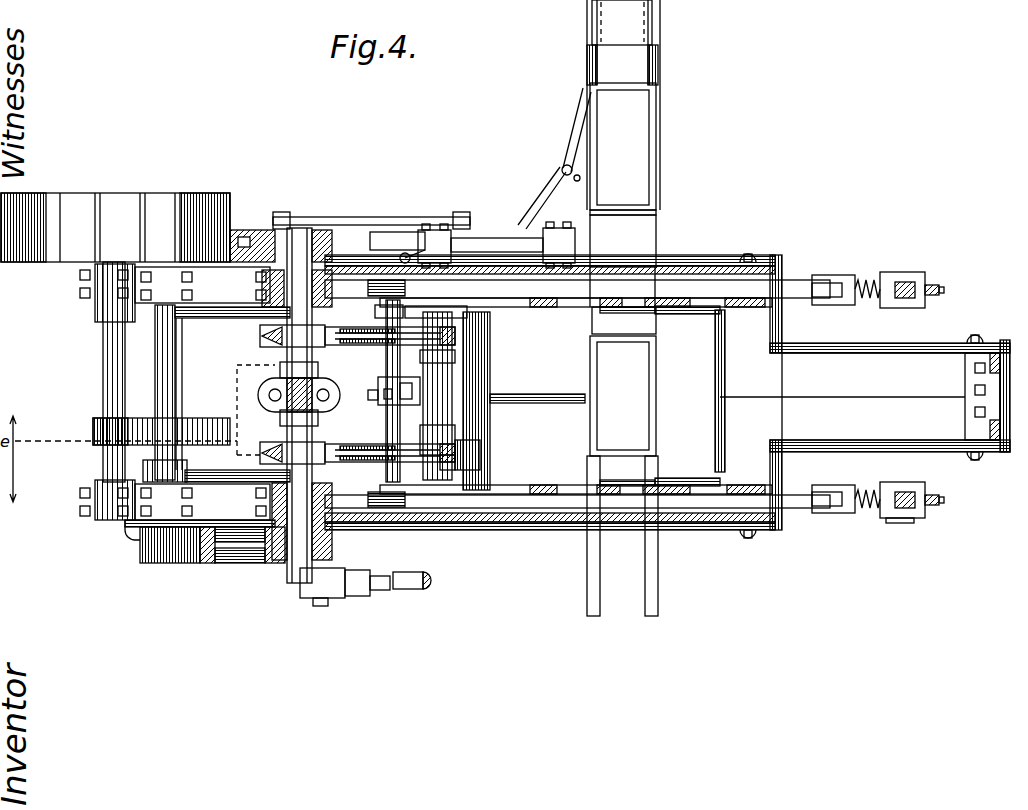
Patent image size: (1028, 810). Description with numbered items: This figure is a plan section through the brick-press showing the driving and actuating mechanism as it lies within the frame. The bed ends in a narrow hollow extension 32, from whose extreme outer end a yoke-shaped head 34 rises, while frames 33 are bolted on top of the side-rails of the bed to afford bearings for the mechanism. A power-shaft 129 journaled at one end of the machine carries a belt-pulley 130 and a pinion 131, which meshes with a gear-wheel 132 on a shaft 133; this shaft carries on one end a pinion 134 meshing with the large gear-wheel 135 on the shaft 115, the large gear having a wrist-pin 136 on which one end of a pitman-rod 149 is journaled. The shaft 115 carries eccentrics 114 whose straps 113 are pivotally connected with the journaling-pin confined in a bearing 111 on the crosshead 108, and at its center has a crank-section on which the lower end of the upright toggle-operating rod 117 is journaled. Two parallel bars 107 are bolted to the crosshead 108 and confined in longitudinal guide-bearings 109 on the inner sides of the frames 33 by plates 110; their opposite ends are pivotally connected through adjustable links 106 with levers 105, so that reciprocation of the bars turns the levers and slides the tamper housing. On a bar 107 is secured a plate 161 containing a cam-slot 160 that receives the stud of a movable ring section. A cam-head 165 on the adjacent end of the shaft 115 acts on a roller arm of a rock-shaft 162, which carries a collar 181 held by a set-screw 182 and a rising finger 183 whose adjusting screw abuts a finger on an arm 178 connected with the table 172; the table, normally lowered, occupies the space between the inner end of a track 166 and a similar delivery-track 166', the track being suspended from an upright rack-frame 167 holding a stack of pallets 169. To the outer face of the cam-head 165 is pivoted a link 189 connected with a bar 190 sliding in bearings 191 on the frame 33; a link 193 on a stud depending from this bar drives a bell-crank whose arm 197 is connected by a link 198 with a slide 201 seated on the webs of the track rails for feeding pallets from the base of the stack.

The narrow hollow extension 32 is at (891, 396).
The frame 33 is at (757, 565).
The yoke-shaped head 34 is at (972, 402).
The lever 105 is at (895, 280).
The link 106 is at (895, 520).
The bar 107 is at (468, 292).
The crosshead 108 is at (482, 368).
The longitudinal guide-bearing 109 is at (370, 282).
The plate 110 is at (545, 306).
The bearing 111 is at (435, 418).
The eccentric strap 113 is at (338, 326).
The eccentric 114 is at (268, 335).
The shaft 115 is at (299, 255).
The toggle-operating rod 117 is at (248, 410).
The power-shaft 129 is at (103, 355).
The belt-pulley 130 is at (115, 227).
The pinion 131 is at (98, 425).
The gear-wheel 132 is at (190, 430).
The shaft 133 is at (172, 378).
The pinion 134 is at (155, 545).
The large gear-wheel 135 is at (203, 565).
The wrist-pin 136 is at (305, 570).
The pitman-rod 149 is at (388, 602).
The cam-slot 160 is at (632, 310).
The plate 161 is at (700, 309).
The rock-shaft 162 is at (392, 362).
The cam-head 165 is at (245, 232).
The track 166 is at (656, 62).
The delivery-track 166' is at (622, 552).
The rack-frame 167 is at (652, 85).
The pallet 169 is at (636, 125).
The table 172 is at (655, 404).
The arm 178 is at (555, 400).
The collar 181 is at (385, 398).
The set-screw 182 is at (370, 395).
The finger 183 is at (403, 401).
The link 189 is at (332, 217).
The bar 190 is at (390, 240).
The bearing 191 is at (430, 240).
The link 193 is at (407, 253).
The bell-crank arm 197 is at (540, 190).
The link 198 is at (578, 130).
The slide 201 is at (622, 22).